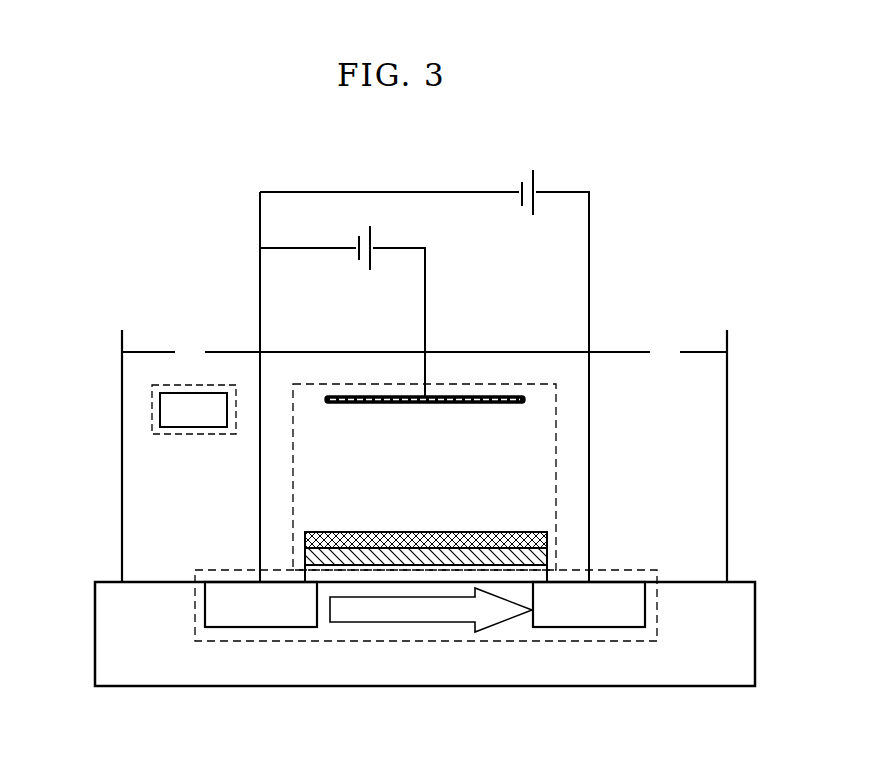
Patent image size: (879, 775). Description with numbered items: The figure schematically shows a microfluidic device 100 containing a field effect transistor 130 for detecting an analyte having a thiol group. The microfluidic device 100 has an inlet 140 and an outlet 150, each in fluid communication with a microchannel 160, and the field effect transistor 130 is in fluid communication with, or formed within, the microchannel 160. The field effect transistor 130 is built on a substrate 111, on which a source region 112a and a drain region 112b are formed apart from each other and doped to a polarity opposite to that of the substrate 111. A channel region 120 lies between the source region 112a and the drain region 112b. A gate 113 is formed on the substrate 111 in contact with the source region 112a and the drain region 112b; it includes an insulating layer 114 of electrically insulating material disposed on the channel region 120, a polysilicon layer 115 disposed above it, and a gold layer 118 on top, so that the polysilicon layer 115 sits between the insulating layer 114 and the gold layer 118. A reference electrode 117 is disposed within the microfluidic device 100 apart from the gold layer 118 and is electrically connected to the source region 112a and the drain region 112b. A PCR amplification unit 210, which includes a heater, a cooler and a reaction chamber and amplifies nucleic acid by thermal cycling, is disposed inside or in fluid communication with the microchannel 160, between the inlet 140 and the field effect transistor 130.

The microfluidic device 100 is at (116, 316).
The substrate 111 is at (118, 658).
The source region 112a is at (227, 615).
The drain region 112b is at (557, 612).
The gate 113 is at (343, 523).
The insulating layer 114 is at (310, 575).
The polysilicon layer 115 is at (307, 549).
The reference electrode 117 is at (490, 396).
The gold layer 118 is at (307, 534).
The channel region 120 is at (403, 625).
The field effect transistor 130 is at (557, 555).
The inlet 140 is at (188, 352).
The outlet 150 is at (667, 352).
The microchannel 160 is at (497, 488).
The PCR amplification unit 210 is at (152, 410).